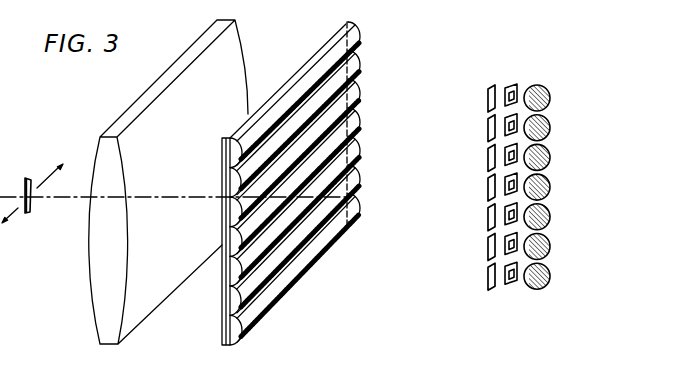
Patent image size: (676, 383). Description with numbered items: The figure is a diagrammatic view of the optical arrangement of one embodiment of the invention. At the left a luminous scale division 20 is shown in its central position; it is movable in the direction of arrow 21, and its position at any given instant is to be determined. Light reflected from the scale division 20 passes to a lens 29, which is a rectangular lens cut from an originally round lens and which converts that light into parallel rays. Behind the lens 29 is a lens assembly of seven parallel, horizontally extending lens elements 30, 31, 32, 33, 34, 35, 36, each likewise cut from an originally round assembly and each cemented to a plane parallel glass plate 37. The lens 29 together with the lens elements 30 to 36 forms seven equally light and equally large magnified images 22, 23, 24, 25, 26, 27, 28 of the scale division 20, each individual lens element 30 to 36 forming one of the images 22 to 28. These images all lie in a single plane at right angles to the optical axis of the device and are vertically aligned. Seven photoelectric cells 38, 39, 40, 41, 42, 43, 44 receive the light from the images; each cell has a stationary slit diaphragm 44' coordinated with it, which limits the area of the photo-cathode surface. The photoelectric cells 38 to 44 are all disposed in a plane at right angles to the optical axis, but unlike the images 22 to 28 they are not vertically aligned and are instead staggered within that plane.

The luminous scale division 20 is at (32, 214).
The arrow 21 is at (45, 174).
The magnified image 22 is at (487, 98).
The magnified image 23 is at (487, 128).
The magnified image 24 is at (487, 158).
The magnified image 25 is at (487, 188).
The magnified image 26 is at (488, 219).
The magnified image 27 is at (488, 249).
The magnified image 28 is at (488, 278).
The lens 29 is at (241, 62).
The lens element 30 is at (361, 36).
The lens element 31 is at (361, 71).
The lens element 32 is at (361, 98).
The lens element 33 is at (361, 127).
The lens element 34 is at (361, 160).
The lens element 35 is at (361, 189).
The lens element 36 is at (361, 219).
The plane parallel glass plate 37 is at (222, 320).
The photoelectric cell 38 is at (551, 98).
The photoelectric cell 39 is at (551, 128).
The photoelectric cell 40 is at (551, 158).
The photoelectric cell 41 is at (551, 190).
The photoelectric cell 42 is at (551, 220).
The photoelectric cell 43 is at (551, 249).
The photoelectric cell 44 is at (559, 283).
The stationary slit diaphragm 44' is at (524, 169).